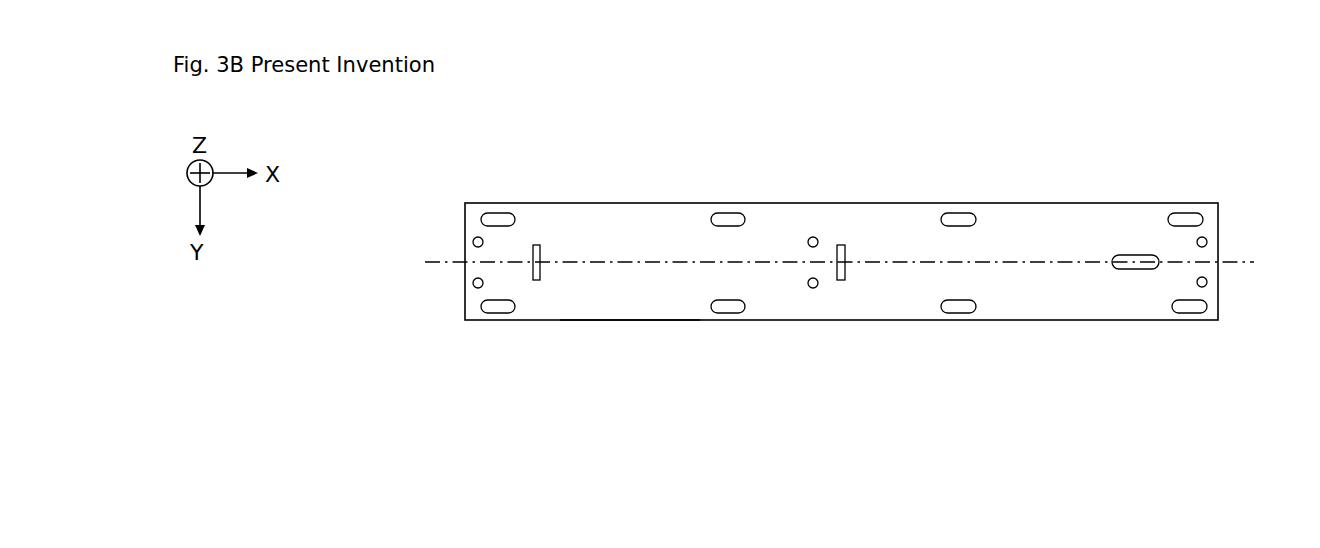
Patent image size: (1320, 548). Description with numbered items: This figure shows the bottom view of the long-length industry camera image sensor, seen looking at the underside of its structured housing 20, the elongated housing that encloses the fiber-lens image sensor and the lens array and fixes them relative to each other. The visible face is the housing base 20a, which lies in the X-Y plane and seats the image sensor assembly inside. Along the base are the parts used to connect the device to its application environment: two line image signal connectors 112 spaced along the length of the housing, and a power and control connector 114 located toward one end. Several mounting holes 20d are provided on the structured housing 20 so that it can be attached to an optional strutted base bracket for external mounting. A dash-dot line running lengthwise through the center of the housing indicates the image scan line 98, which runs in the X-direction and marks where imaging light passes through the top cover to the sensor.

The structured housing 20 is at (1093, 211).
The housing base 20a is at (630, 290).
The mounting holes 20d is at (724, 216).
The image scan line 98 is at (1243, 260).
The line image signal connectors 112 is at (540, 268).
The power and control connector 114 is at (1135, 263).